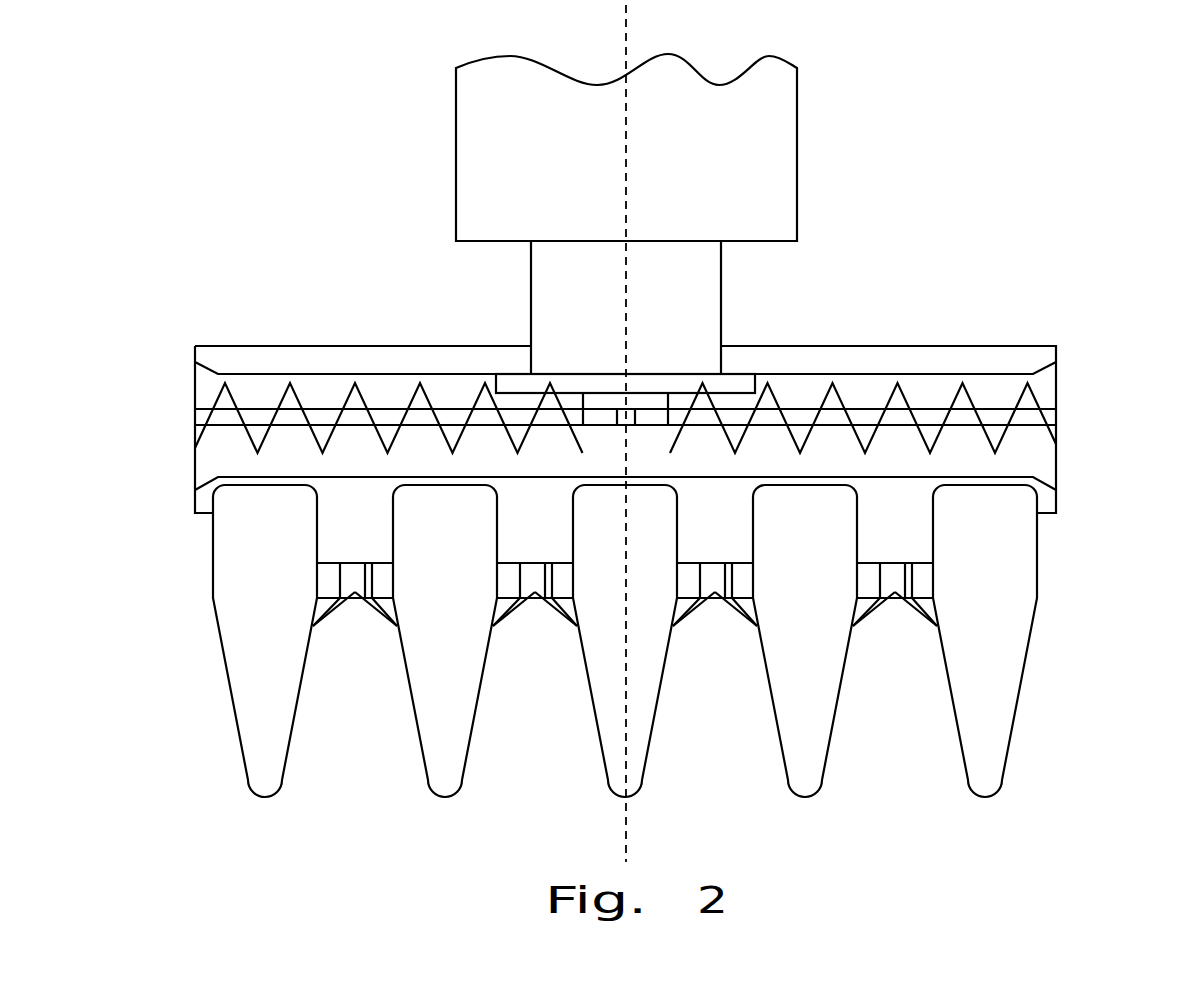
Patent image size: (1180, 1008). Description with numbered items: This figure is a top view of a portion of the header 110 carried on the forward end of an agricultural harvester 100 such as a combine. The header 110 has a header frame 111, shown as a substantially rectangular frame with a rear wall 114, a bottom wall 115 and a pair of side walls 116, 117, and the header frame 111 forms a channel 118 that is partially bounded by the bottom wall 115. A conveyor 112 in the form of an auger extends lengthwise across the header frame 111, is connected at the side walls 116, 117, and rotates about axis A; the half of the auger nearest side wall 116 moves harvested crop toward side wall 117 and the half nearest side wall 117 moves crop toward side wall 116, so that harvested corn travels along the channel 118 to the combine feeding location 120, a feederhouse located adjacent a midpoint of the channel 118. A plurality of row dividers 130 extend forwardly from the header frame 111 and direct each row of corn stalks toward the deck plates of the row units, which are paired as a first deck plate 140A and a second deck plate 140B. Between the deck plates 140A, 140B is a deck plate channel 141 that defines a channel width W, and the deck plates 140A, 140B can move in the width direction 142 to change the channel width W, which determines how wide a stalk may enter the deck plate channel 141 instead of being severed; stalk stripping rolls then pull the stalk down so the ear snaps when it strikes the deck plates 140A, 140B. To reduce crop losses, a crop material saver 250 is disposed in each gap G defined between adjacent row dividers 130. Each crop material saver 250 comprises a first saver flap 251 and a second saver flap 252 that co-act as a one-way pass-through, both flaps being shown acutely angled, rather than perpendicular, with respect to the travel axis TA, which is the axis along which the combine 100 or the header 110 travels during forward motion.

The agricultural harvester 100 is at (852, 124).
The header 110 is at (190, 757).
The header frame 111 is at (270, 345).
The conveyor 112 is at (375, 417).
The rear wall 114 is at (808, 345).
The bottom wall 115 is at (832, 440).
The side wall 116 is at (195, 378).
The side wall 117 is at (1057, 393).
The channel 118 is at (1045, 398).
The combine feeding location 120 is at (636, 373).
The row divider 130 is at (285, 767).
The deck plate channel 141 is at (347, 556).
The width direction 142 is at (393, 580).
The crop material saver 250 is at (342, 616).
The first saver flap 251 is at (320, 612).
The second saver flap 252 is at (395, 620).
The first deck plate 140A is at (333, 612).
The second deck plate 140B is at (374, 607).
The travel axis TA is at (624, 40).
The axis A is at (193, 417).
The channel width W is at (365, 572).
The gap G is at (371, 688).